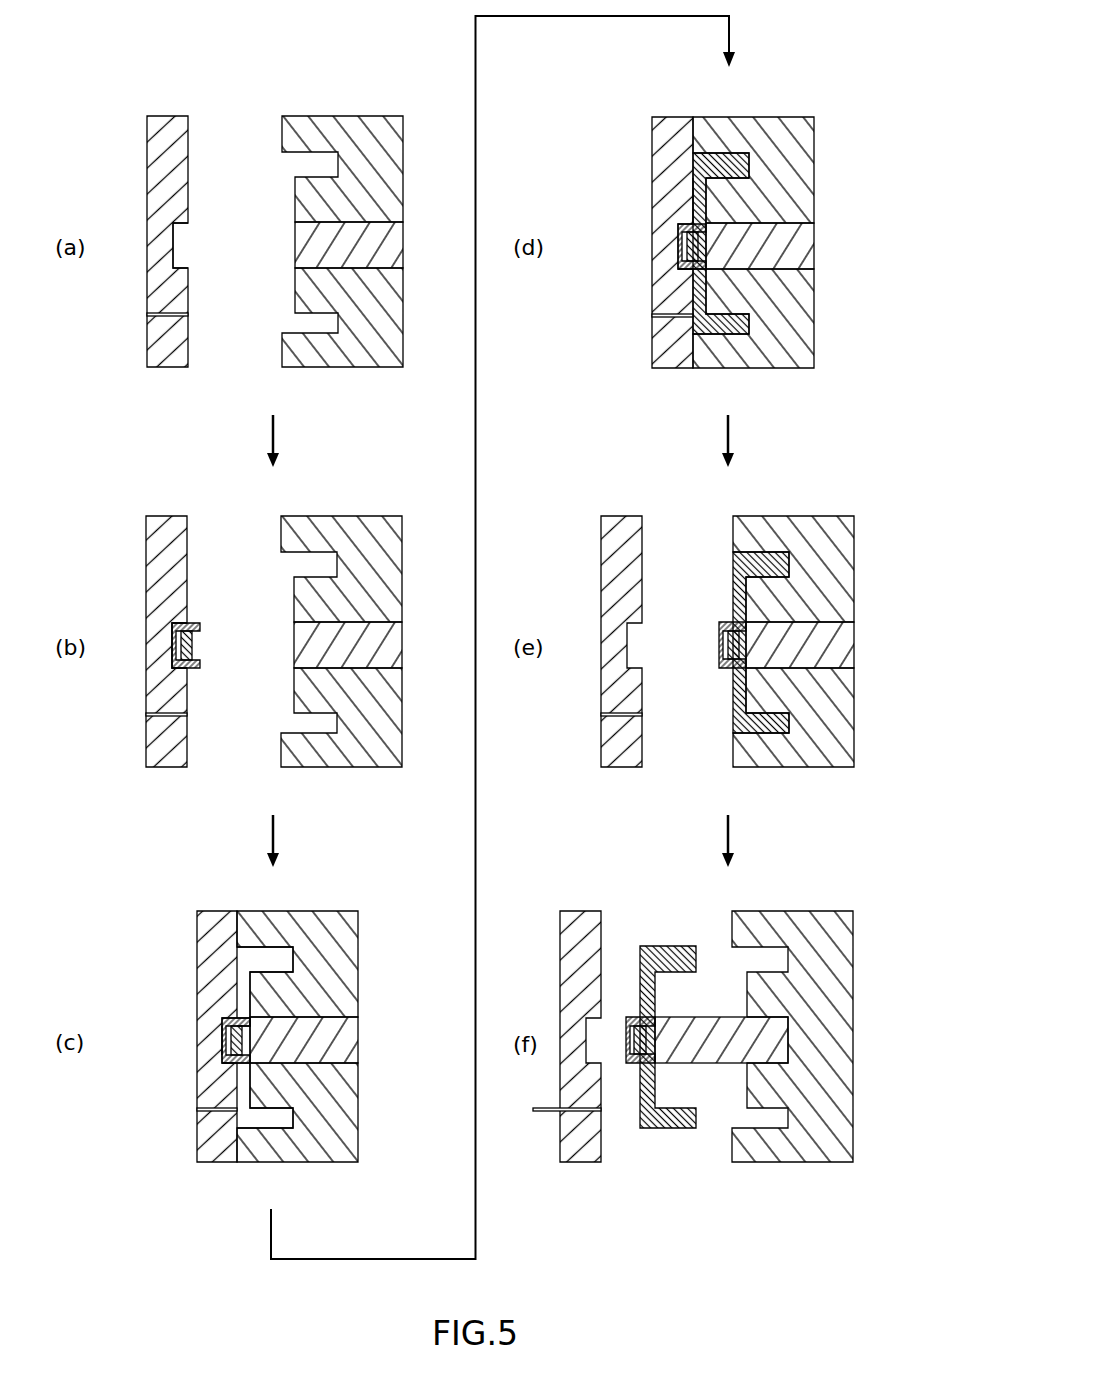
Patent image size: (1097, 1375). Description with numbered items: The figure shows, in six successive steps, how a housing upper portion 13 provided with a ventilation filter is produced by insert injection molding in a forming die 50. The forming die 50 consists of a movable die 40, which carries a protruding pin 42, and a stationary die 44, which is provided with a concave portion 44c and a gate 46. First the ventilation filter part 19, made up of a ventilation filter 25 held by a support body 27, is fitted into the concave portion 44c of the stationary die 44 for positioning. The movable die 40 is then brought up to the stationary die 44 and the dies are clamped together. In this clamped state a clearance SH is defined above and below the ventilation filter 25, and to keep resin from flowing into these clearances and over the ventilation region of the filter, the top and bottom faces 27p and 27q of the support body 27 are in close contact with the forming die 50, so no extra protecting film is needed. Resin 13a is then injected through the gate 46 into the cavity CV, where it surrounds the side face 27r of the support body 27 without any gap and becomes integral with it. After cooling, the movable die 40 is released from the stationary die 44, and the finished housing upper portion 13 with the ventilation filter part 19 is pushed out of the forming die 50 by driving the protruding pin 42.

The housing upper portion 13 is at (762, 555).
The resin 13a is at (722, 160).
The ventilation filter part 19 is at (427, 603).
The ventilation filter 25 is at (192, 644).
The support body 27 is at (444, 599).
The top face of the support body 27p is at (222, 1026).
The bottom face of the support body 27q is at (249, 1029).
The side face of the support body 27r is at (691, 190).
The movable die 40 is at (343, 361).
The protruding pin 42 is at (394, 241).
The stationary die 44 is at (172, 361).
The concave portion 44c is at (176, 227).
The gate 46 is at (149, 321).
The forming die 50 is at (426, 120).
The cavity CV is at (253, 952).
The clearance SH is at (241, 1068).